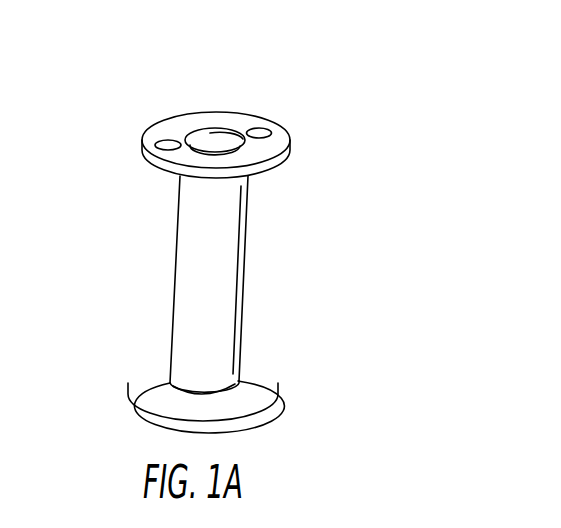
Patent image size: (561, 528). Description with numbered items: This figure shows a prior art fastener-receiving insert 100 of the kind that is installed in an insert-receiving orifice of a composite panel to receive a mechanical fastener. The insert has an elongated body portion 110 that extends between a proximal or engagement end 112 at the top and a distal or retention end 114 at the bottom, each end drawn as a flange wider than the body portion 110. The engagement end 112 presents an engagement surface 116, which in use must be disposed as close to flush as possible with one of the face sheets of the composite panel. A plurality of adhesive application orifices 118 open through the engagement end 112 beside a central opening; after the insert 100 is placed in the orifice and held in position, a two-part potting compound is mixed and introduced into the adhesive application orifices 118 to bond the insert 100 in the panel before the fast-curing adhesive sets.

The fastener-receiving insert 100 is at (366, 134).
The body portion 110 is at (242, 295).
The proximal or engagement end 112 is at (152, 158).
The distal or retention end 114 is at (139, 403).
The engagement surface 116 is at (287, 157).
The adhesive application orifices 118 is at (165, 143).